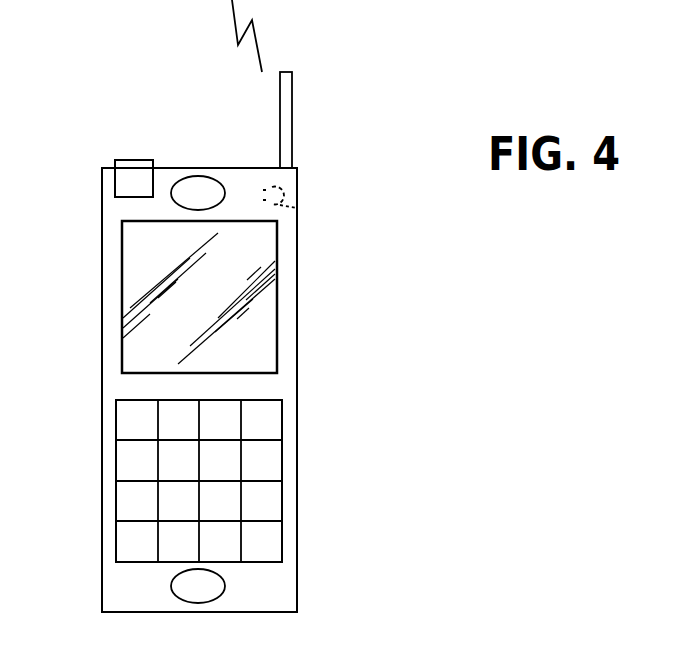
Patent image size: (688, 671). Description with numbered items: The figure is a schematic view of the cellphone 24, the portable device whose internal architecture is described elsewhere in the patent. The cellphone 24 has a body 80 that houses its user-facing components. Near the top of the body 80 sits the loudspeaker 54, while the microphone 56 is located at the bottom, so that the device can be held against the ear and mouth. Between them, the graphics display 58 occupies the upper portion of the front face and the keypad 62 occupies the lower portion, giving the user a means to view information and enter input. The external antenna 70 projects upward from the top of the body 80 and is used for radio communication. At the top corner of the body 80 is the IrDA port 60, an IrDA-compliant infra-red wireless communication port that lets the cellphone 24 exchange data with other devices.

The cellphone 24 is at (378, 292).
The loudspeaker 54 is at (297, 208).
The microphone 56 is at (195, 595).
The graphical display 58 is at (137, 252).
The wireless communication port 60 is at (114, 160).
The keypad 62 is at (297, 475).
The external antenna 70 is at (292, 117).
The body 80 is at (102, 459).